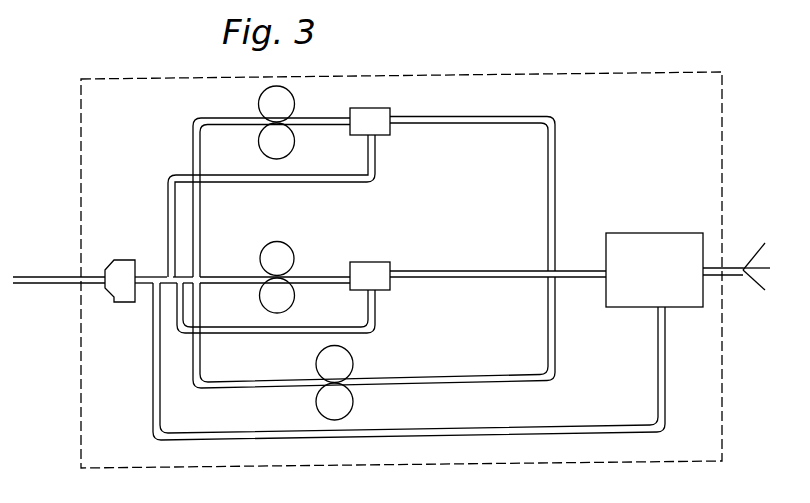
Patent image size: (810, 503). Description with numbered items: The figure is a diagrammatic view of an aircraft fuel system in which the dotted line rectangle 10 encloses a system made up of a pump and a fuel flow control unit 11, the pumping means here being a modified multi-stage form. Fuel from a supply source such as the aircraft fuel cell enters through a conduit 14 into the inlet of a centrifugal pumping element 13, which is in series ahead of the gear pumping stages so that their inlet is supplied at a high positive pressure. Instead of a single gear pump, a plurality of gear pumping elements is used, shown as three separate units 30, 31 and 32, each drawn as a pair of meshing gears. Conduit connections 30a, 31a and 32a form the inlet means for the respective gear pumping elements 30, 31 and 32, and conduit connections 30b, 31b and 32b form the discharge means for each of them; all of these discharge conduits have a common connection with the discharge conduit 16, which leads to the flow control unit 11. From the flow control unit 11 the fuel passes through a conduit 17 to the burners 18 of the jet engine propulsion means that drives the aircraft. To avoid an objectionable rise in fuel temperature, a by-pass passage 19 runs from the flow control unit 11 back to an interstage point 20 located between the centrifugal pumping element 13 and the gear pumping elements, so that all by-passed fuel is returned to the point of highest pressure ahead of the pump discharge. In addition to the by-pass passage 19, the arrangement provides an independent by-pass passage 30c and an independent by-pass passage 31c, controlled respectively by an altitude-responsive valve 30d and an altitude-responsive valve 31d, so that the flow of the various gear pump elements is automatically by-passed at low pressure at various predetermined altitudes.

The dotted line rectangle 10 is at (81, 178).
The fuel flow control unit 11 is at (648, 248).
The centrifugal pumping element 13 is at (125, 260).
The conduit 14 is at (45, 277).
The discharge conduit 16 is at (572, 270).
The conduit 17 is at (723, 276).
The burners 18 is at (743, 266).
The by-pass passage 19 is at (415, 432).
The interstage point 20 is at (149, 292).
The gear pumping element 30 is at (268, 138).
The conduit connection 30a is at (193, 123).
The conduit connection 30b is at (515, 117).
The independent by-pass passage 30c is at (305, 178).
The altitude-responsive valve 30d is at (385, 126).
The gear pumping element 31 is at (272, 293).
The conduit connection 31a is at (213, 277).
The conduit connection 31b is at (428, 271).
The independent by-pass passage 31c is at (307, 326).
The altitude-responsive valve 31d is at (390, 285).
The gear pumping element 32 is at (343, 402).
The conduit connection 32a is at (230, 381).
The conduit connection 32b is at (436, 377).